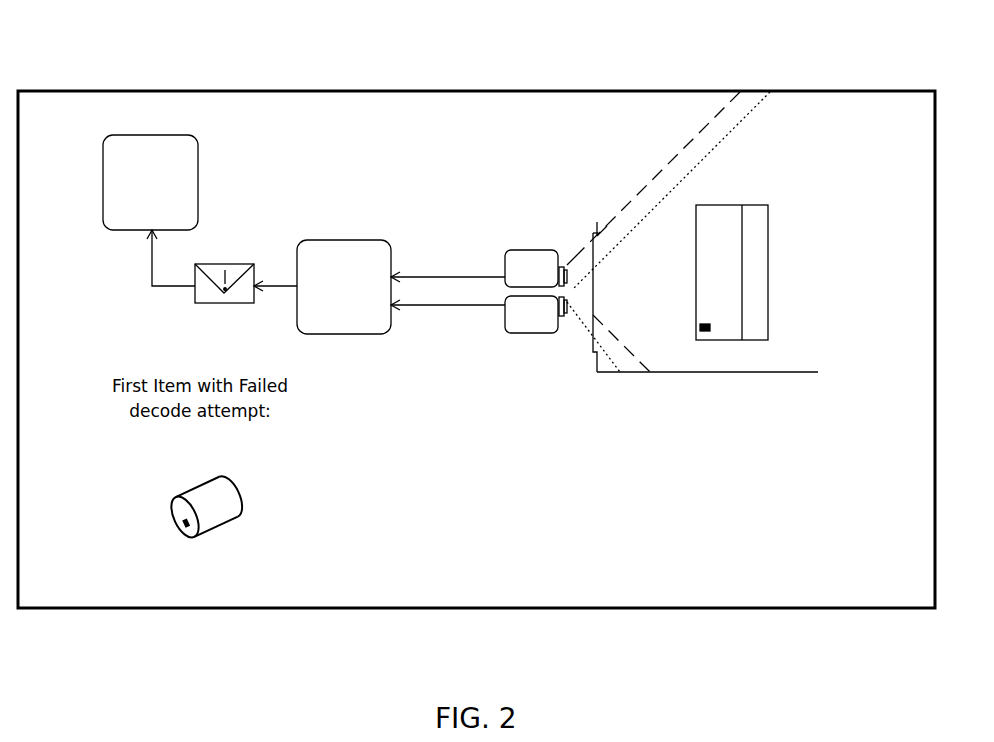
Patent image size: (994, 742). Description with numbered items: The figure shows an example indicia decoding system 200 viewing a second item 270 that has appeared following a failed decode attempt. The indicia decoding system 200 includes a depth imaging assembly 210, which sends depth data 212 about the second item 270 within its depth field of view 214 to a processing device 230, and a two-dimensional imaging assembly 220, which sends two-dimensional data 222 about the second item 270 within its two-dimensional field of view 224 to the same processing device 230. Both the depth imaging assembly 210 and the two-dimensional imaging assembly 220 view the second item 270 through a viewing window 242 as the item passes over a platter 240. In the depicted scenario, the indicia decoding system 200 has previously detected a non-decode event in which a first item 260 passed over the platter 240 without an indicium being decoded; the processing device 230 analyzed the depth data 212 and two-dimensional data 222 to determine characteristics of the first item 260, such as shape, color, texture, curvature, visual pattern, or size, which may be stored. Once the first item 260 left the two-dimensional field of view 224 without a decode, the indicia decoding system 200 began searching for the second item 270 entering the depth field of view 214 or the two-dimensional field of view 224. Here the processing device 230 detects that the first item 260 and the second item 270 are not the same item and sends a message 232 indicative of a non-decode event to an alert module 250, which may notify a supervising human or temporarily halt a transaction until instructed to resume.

The indicia decoding system 200 is at (262, 91).
The depth imaging assembly 210 is at (551, 278).
The depth data 212 is at (446, 242).
The depth field of view 214 is at (538, 273).
The 2D imaging assembly 220 is at (551, 324).
The 2D data 222 is at (448, 343).
The 2D field of view 224 is at (653, 232).
The processing device 230 is at (364, 298).
The message 232 is at (269, 241).
The platter 240 is at (722, 372).
The viewing window 242 is at (593, 318).
The alert module 250 is at (170, 193).
The first item 260 is at (210, 494).
The second item 270 is at (730, 216).